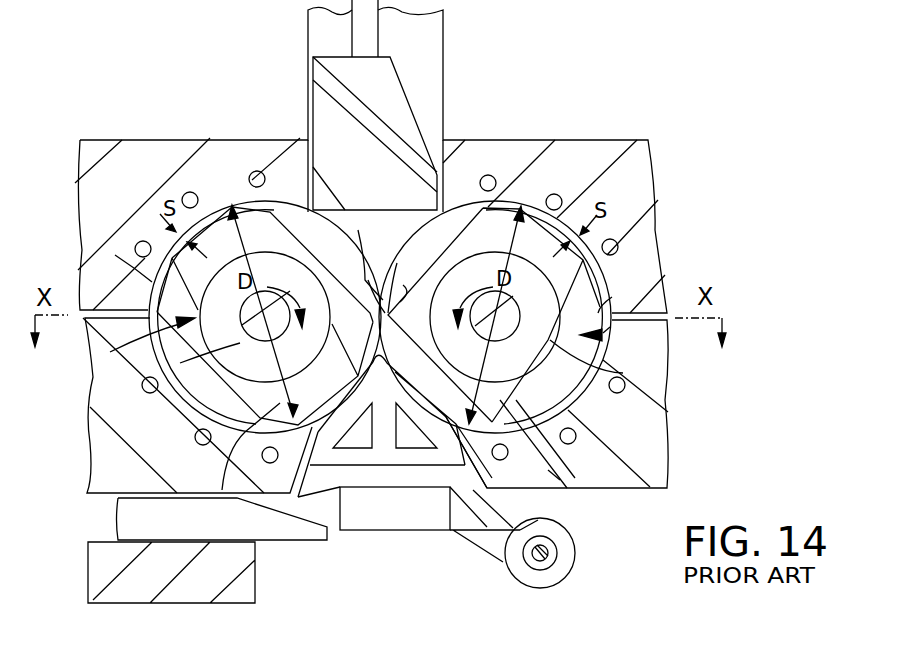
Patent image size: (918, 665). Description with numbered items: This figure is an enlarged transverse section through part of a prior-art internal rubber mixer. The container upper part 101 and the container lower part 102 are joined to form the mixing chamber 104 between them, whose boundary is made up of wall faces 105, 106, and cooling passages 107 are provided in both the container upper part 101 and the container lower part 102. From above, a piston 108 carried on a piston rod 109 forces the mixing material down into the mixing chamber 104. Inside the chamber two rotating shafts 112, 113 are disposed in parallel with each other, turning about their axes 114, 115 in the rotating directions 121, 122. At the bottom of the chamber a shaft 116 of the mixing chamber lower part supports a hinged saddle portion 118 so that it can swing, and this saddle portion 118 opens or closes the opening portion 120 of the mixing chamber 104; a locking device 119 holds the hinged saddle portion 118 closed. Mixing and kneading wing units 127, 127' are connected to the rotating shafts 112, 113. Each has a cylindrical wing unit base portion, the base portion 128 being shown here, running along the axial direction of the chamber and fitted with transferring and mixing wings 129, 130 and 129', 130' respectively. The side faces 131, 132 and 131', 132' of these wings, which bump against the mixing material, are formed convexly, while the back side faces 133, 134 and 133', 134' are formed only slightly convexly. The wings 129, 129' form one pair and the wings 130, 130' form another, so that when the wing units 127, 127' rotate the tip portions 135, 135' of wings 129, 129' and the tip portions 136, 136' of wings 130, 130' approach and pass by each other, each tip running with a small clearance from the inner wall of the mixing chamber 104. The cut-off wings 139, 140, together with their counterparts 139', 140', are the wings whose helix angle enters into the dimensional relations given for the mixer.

The container upper part 101 is at (635, 168).
The container lower part 102 is at (655, 472).
The mixing chamber 104 is at (587, 278).
The wall face of the mixing chamber 105 is at (612, 297).
The wall face of the mixing chamber 106 is at (115, 255).
The cooling passages 107 is at (612, 245).
The piston 108 is at (318, 92).
The piston rod 109 is at (318, 32).
The rotating shaft 112 is at (470, 330).
The rotating shaft 113 is at (250, 310).
The axis of rotating shaft 114 is at (500, 327).
The axis of rotating shaft 115 is at (274, 322).
The shaft of mixing chamber lower part 116 is at (557, 553).
The hinged saddle portion 118 is at (378, 440).
The locking device 119 is at (268, 530).
The opening portion 120 is at (470, 530).
The rotating direction 121 is at (460, 303).
The rotating direction 122 is at (268, 308).
The mixing and kneading wing unit 127 is at (646, 340).
The mixing and kneading wing unit 127' is at (111, 345).
The cylindrical wing unit base portion 128 is at (623, 373).
The transferring and mixing wing 129 is at (473, 215).
The transferring and mixing wing 129' is at (310, 208).
The transferring and mixing wing 130 is at (566, 441).
The transferring and mixing wing 130' is at (172, 439).
The side face of wing 131 is at (430, 409).
The side face of wing 131' is at (350, 381).
The side face of wing 132 is at (572, 389).
The side face of wing 132' is at (191, 400).
The back side face of wing 133 is at (424, 279).
The back side face of wing 133' is at (375, 242).
The back side face of wing 134 is at (510, 467).
The back side face of wing 134' is at (218, 463).
The tip portion of wing 135 is at (409, 255).
The tip portion of wing 135' is at (379, 274).
The tip portion of wing 136 is at (577, 492).
The tip portion of wing 136' is at (232, 471).
The cut-off wing 139 is at (525, 201).
The rotor wing tip 139' is at (220, 205).
The cut-off wing 140 is at (419, 464).
The discharge opening 140' is at (361, 464).